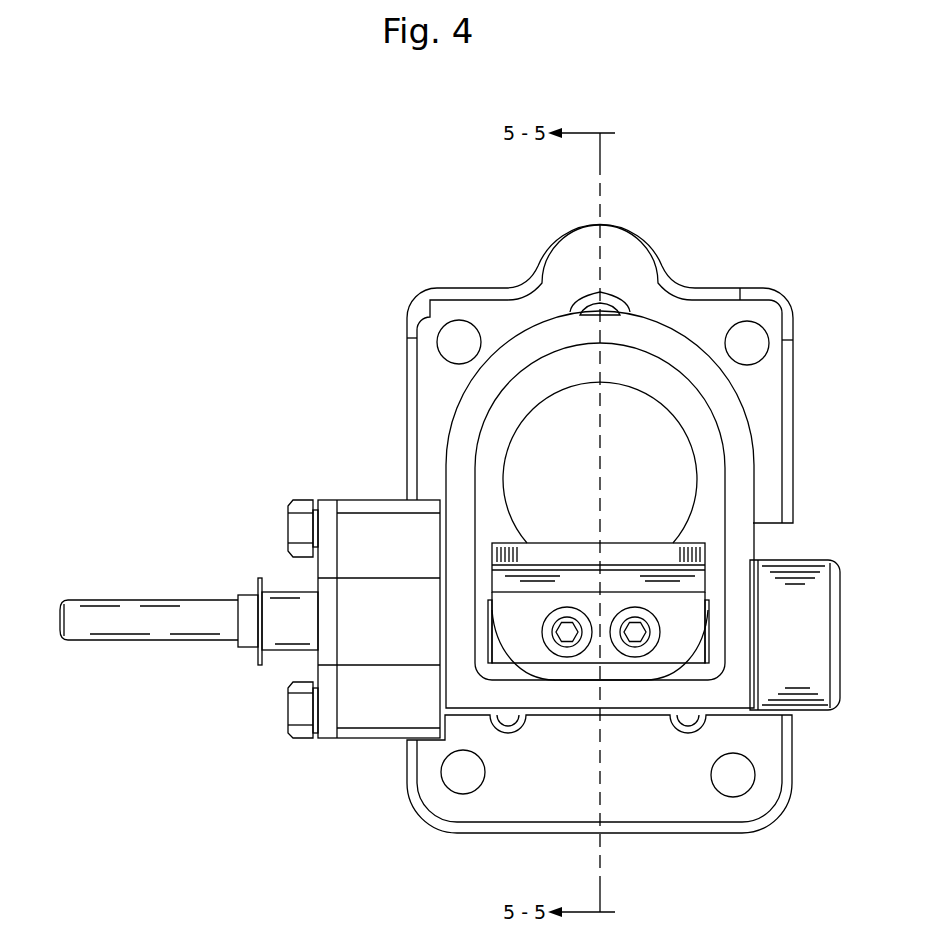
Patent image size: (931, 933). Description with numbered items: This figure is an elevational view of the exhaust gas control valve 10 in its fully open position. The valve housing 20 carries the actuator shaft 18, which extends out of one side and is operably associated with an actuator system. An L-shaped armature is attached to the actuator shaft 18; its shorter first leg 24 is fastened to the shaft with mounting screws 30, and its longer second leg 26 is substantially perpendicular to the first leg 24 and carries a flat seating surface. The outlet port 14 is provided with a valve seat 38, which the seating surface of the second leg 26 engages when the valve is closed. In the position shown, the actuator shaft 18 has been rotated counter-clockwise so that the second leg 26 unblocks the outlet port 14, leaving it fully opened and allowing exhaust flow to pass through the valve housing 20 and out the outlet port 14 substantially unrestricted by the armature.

The exhaust gas control valve 10 is at (600, 332).
The outlet port 14 is at (535, 442).
The actuator shaft 18 is at (710, 667).
The valve housing 20 is at (650, 323).
The first leg 24 is at (522, 633).
The second leg 26 is at (670, 548).
The mounting screws 30 is at (567, 648).
The valve seat 38 is at (538, 377).